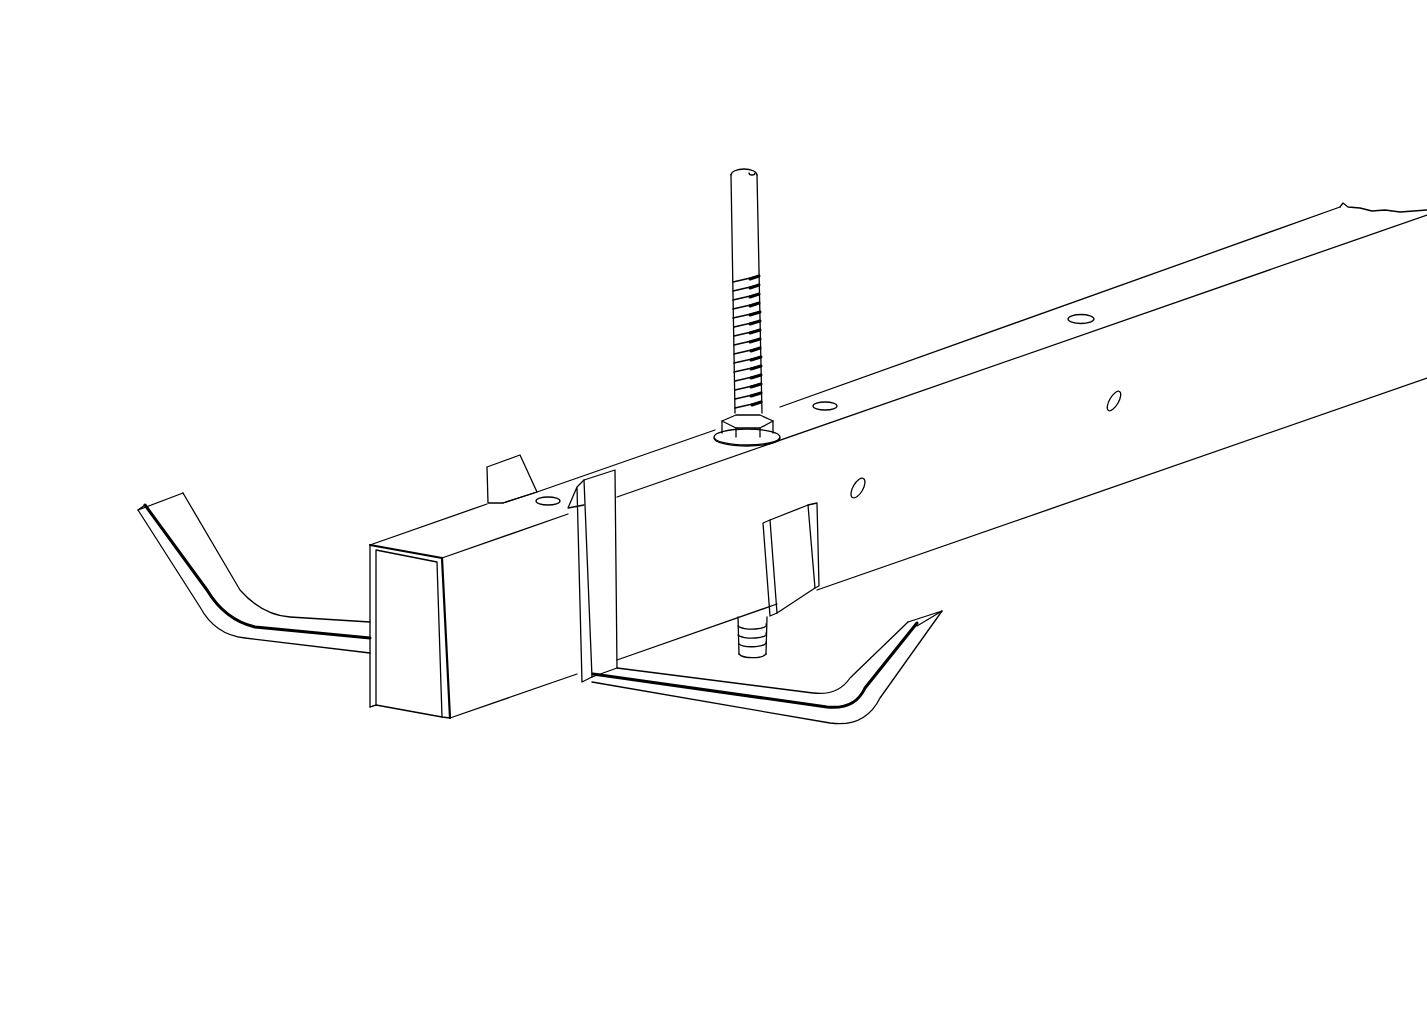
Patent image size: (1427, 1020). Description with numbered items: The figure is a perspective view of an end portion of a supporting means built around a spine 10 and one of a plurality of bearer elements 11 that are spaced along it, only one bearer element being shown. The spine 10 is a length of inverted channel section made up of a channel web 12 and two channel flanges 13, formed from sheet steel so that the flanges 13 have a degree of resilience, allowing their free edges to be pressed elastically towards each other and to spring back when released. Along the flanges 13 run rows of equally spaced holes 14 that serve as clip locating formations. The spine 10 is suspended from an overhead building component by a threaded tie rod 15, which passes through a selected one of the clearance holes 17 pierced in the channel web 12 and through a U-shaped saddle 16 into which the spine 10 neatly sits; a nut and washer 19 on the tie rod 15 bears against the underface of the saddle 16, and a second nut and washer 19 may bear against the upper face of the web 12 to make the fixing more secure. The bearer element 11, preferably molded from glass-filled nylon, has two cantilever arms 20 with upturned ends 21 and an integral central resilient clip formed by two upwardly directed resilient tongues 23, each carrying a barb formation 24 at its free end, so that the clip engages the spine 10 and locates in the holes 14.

The spine 10 is at (1140, 215).
The bearer element 11 is at (236, 702).
The channel web 12 is at (1305, 233).
The channel flange 13 is at (392, 682).
The hole 14 is at (866, 490).
The threaded tie rod 15 is at (738, 209).
The U-shaped saddle 16 is at (805, 548).
The clearance hole 17 is at (550, 497).
The nut and washer 19 is at (732, 420).
The cantilever arm 20 is at (300, 622).
The upturned end 21 is at (177, 512).
The resilient tongue 23 is at (600, 627).
The barb formation 24 is at (512, 470).